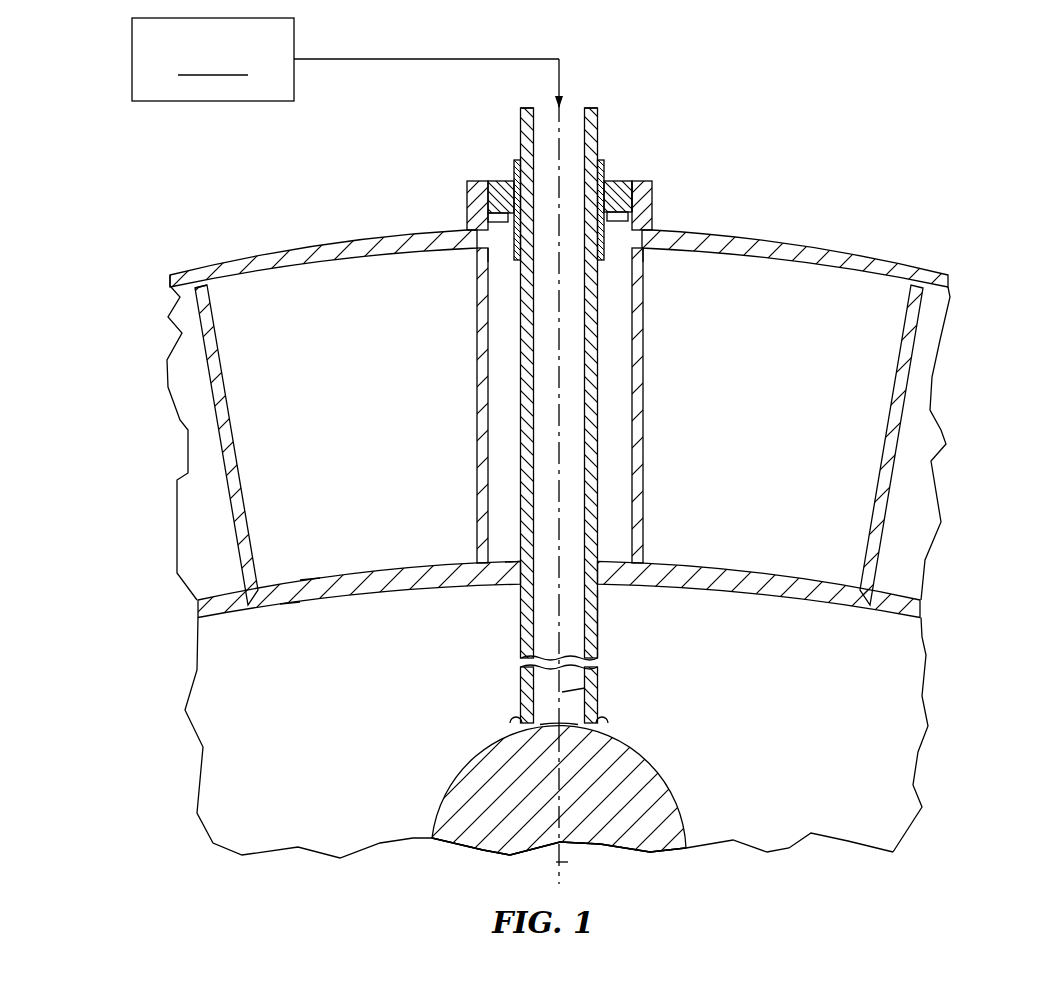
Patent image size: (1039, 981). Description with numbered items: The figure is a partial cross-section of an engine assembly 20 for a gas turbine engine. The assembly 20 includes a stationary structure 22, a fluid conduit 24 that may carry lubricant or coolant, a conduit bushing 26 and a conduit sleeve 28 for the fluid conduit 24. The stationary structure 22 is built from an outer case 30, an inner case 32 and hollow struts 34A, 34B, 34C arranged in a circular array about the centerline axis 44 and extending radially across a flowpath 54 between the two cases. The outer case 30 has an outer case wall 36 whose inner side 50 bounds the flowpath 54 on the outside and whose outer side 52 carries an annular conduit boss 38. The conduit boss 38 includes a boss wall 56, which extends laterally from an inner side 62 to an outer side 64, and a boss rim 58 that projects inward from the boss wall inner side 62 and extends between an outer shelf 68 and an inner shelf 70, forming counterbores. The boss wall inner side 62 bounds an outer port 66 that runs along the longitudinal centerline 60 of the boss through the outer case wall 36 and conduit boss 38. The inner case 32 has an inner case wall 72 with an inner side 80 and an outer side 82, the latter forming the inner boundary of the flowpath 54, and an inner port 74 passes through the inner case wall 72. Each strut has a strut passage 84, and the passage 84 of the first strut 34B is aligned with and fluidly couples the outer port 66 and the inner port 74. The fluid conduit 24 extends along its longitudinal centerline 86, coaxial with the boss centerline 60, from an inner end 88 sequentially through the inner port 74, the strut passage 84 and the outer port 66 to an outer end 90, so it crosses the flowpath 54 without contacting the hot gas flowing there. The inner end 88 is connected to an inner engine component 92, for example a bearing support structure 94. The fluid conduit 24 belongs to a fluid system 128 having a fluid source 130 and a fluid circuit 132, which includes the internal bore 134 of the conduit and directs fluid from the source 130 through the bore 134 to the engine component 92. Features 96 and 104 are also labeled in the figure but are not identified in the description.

The engine assembly 20 is at (961, 120).
The stationary structure 22 is at (940, 256).
The fluid conduit 24 is at (601, 645).
The conduit bushing 26 is at (621, 180).
The conduit sleeve 28 is at (513, 163).
The outer turbine engine case 30 is at (810, 246).
The inner turbine engine case 32 is at (767, 604).
The turbine engine strut 34A is at (243, 488).
The first strut 34B is at (647, 448).
The turbine engine strut 34C is at (873, 465).
The outer case wall 36 is at (342, 266).
The annular conduit boss 38 is at (465, 197).
The centerline axis 44 is at (566, 862).
The inner side of the outer case 50 is at (243, 288).
The outer side of the outer case wall 52 is at (251, 262).
The flowpath 54 is at (342, 408).
The boss wall 56 is at (648, 209).
The boss rim 58 is at (613, 218).
The longitudinal centerline of the conduit boss 60 is at (599, 697).
The inner side of the boss wall 62 is at (490, 227).
The outer side of the conduit boss 64 is at (489, 219).
The outer port 66 is at (508, 247).
The outer shelf of the boss rim 68 is at (634, 188).
The inner shelf of the boss rim 70 is at (643, 249).
The inner case wall 72 is at (353, 599).
The inner port 74 is at (515, 584).
The inner side of the inner case wall 80 is at (285, 606).
The outer side of the inner case 82 is at (308, 579).
The strut passage 84 is at (492, 420).
The longitudinal centerline of the fluid conduit 86 is at (559, 695).
The inner end of the fluid conduit 88 is at (589, 728).
The outer end of the fluid conduit 90 is at (592, 108).
The inner component 92 is at (684, 785).
The bearing support structure 94 is at (559, 846).
The tube outer surface 96 is at (599, 607).
The fillet 104 is at (559, 720).
The fluid system 128 is at (589, 58).
The fluid source 130 is at (132, 60).
The fluid circuit 132 is at (368, 62).
The internal bore 134 is at (573, 515).